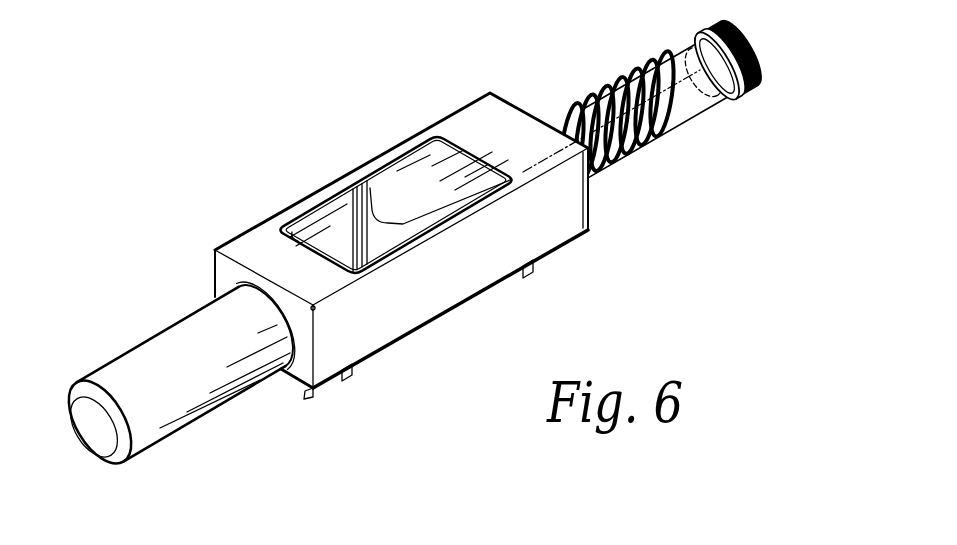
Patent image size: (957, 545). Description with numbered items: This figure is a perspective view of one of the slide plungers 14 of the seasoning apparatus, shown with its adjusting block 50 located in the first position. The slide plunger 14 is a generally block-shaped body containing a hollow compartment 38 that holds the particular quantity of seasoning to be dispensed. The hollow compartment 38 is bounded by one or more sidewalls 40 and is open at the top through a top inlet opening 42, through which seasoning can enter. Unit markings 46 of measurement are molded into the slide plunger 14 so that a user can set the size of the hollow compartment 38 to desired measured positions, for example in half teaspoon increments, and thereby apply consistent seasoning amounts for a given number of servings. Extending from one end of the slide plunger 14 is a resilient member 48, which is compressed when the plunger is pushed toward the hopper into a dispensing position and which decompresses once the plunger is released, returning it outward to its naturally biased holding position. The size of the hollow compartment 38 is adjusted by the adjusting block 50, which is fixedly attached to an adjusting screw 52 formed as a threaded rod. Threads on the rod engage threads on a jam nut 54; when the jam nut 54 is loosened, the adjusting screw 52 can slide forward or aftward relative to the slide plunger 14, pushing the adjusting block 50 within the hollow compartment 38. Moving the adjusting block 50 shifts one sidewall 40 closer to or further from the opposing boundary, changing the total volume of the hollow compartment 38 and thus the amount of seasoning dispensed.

The slide plunger 14 is at (149, 141).
The hollow compartment 38 is at (330, 247).
The sidewall 40 is at (377, 259).
The top inlet opening 42 is at (342, 203).
The unit markings 46 is at (307, 203).
The resilient member 48 is at (612, 88).
The adjusting block 50 is at (419, 187).
The adjusting screw 52 is at (668, 83).
The jam nut 54 is at (747, 92).